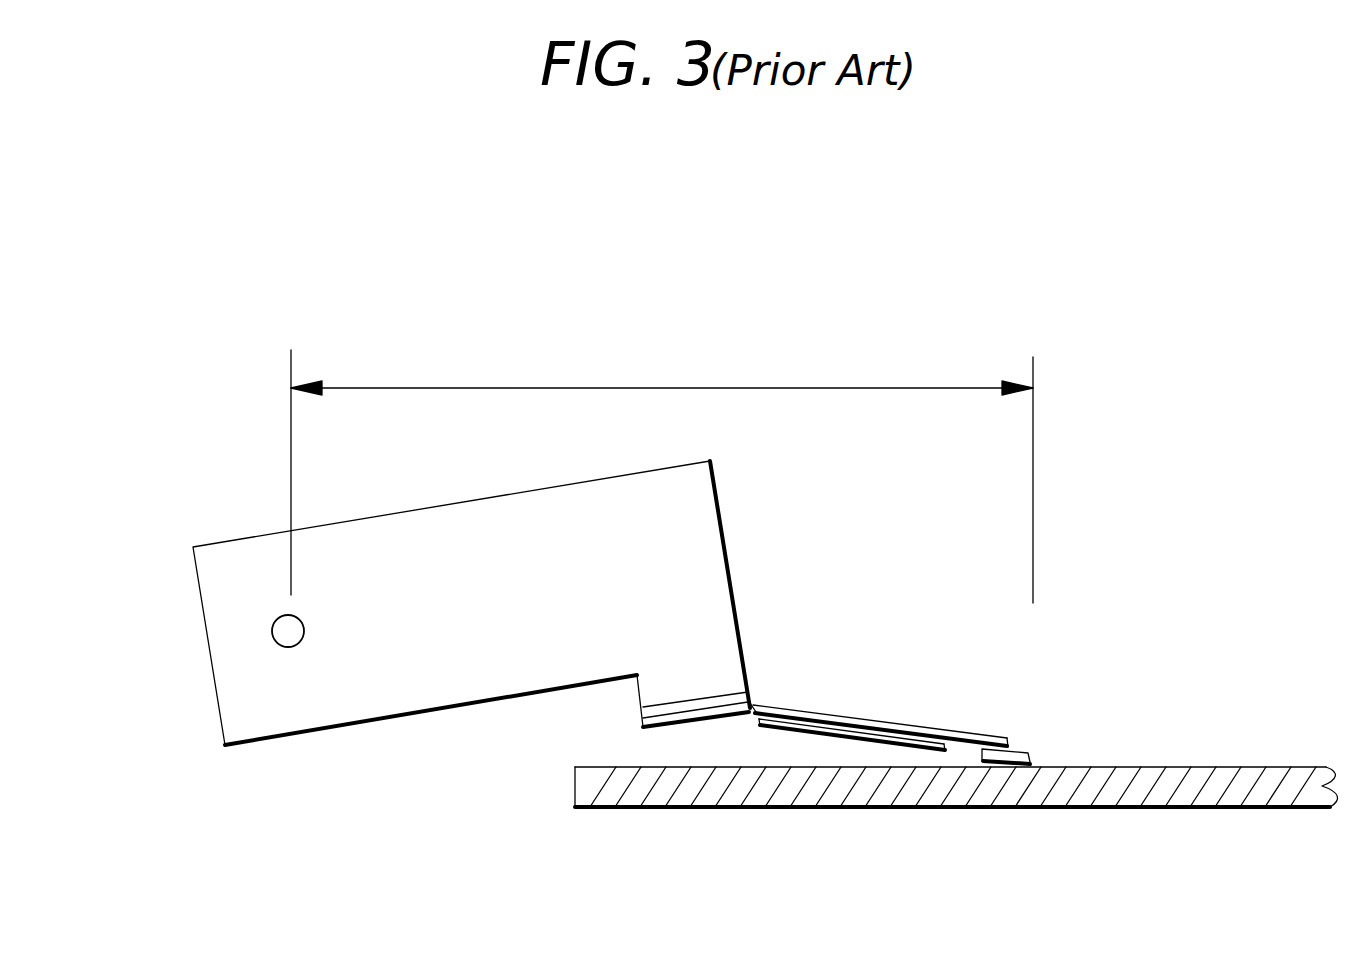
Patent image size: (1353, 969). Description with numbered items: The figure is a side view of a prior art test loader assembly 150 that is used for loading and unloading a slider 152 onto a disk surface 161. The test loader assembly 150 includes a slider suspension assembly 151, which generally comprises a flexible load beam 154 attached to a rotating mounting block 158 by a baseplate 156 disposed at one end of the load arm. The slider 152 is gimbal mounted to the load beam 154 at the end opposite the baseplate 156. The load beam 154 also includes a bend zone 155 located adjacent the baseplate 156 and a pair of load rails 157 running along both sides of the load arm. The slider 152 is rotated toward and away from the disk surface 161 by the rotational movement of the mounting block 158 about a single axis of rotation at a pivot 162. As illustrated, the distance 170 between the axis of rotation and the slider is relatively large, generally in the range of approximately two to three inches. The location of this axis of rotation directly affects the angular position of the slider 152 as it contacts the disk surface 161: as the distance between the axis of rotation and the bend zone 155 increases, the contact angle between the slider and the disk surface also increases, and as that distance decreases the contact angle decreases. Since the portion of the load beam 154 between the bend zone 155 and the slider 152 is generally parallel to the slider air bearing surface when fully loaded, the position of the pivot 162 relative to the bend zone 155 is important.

The test loader assembly 150 is at (207, 474).
The slider suspension assembly 151 is at (978, 686).
The slider 152 is at (1032, 752).
The flexible load beam 154 is at (875, 720).
The bend zone 155 is at (752, 705).
The baseplate 156 is at (651, 729).
The load rails 157 is at (808, 735).
The rotating mounting block 158 is at (527, 608).
The disk surface 161 is at (1305, 767).
The pivot 162 is at (282, 632).
The distance 170 is at (693, 388).